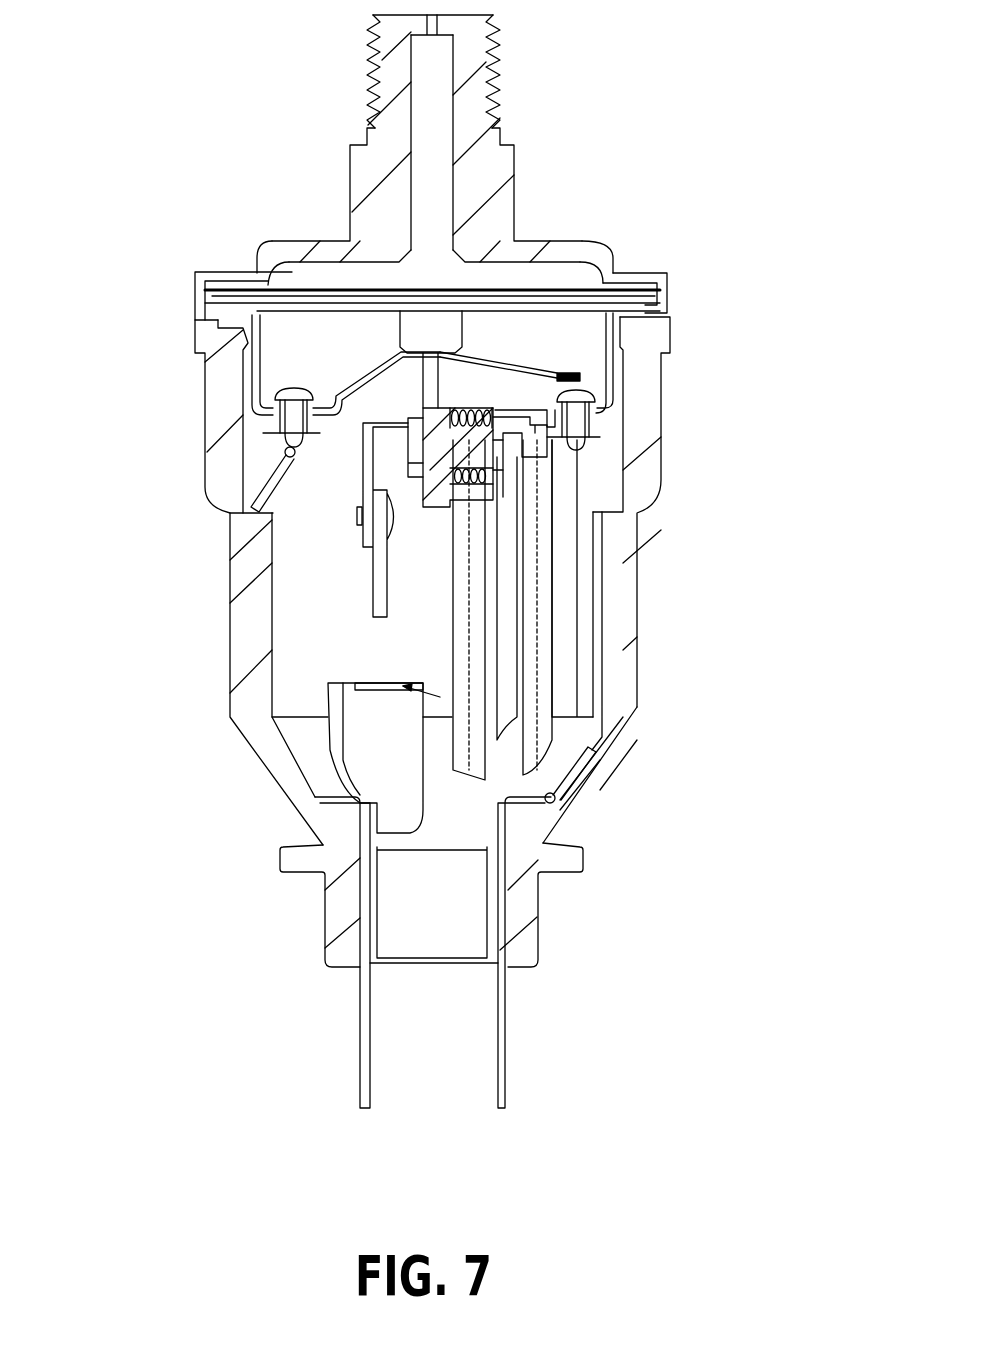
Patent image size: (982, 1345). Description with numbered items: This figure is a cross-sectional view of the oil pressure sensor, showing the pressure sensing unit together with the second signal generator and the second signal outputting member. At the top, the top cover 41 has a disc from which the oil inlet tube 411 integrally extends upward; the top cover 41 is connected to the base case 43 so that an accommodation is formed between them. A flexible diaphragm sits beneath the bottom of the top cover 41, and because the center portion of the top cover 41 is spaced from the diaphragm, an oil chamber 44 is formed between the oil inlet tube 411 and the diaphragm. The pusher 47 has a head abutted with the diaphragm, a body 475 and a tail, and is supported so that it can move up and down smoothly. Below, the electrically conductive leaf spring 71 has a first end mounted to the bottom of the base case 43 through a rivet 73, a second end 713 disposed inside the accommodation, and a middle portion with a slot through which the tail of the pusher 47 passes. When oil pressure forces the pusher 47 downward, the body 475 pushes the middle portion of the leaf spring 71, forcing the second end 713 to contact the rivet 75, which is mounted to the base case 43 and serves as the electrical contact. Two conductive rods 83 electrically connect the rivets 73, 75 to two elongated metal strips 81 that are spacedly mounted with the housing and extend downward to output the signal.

The oil inlet tube 411 is at (473, 60).
The top cover 41 is at (565, 250).
The base case 43 is at (665, 283).
The oil chamber 44 is at (540, 272).
The pusher 47 is at (378, 330).
The body 475 is at (450, 325).
The electrically conductive leaf spring 71 is at (325, 376).
The second end 713 is at (582, 379).
The rivet 73 is at (295, 418).
The rivet 75 is at (578, 402).
The conductive rods 83 is at (250, 495).
The elongated metal strips 81 is at (362, 1043).